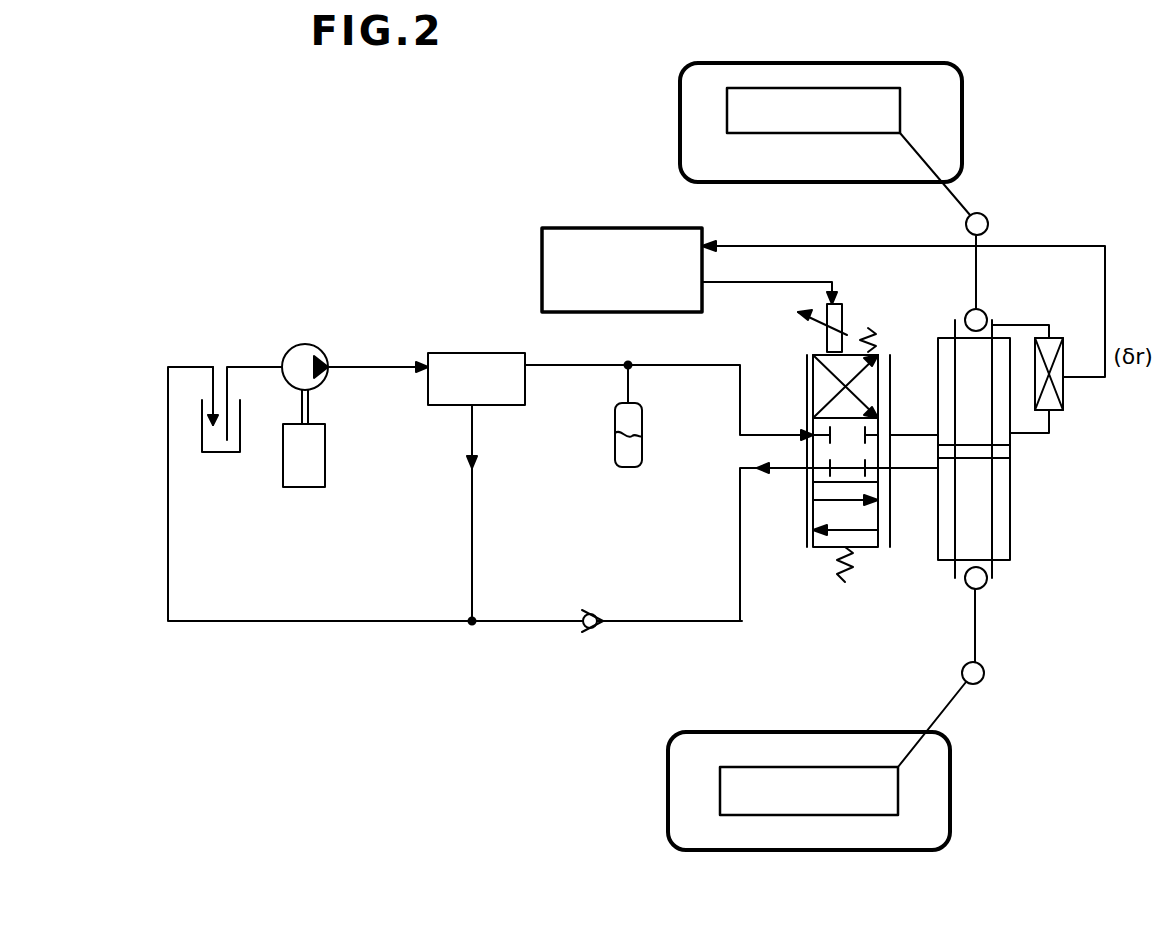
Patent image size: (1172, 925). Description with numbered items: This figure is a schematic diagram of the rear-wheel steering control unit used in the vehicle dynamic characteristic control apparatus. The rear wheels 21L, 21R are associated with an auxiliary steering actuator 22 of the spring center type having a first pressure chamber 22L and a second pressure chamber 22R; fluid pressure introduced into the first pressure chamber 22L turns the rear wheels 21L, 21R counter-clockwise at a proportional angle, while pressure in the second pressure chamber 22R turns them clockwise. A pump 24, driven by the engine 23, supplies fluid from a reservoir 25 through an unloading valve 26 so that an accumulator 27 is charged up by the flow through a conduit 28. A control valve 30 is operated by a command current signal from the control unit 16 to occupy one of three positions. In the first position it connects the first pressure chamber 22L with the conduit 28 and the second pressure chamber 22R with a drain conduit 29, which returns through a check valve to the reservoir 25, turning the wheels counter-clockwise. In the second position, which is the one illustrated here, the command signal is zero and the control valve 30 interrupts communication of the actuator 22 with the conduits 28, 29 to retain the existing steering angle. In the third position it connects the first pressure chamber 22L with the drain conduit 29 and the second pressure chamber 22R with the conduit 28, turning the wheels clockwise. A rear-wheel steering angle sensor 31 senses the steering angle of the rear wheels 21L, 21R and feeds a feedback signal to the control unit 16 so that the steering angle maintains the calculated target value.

The control unit 16 is at (616, 228).
The rear wheel 21R is at (962, 140).
The rear wheel 21L is at (950, 785).
The auxiliary steering actuator 22 is at (1004, 449).
The second pressure chamber 22R is at (998, 428).
The first pressure chamber 22L is at (1000, 542).
The engine 23 is at (304, 488).
The pump 24 is at (310, 346).
The reservoir 25 is at (199, 437).
The unloading valve 26 is at (472, 353).
The accumulator 27 is at (615, 445).
The conduit 28 is at (742, 378).
The drain conduit 29 is at (742, 492).
The control valve 30 is at (822, 550).
The rear-wheel steering angle sensor 31 is at (1063, 395).